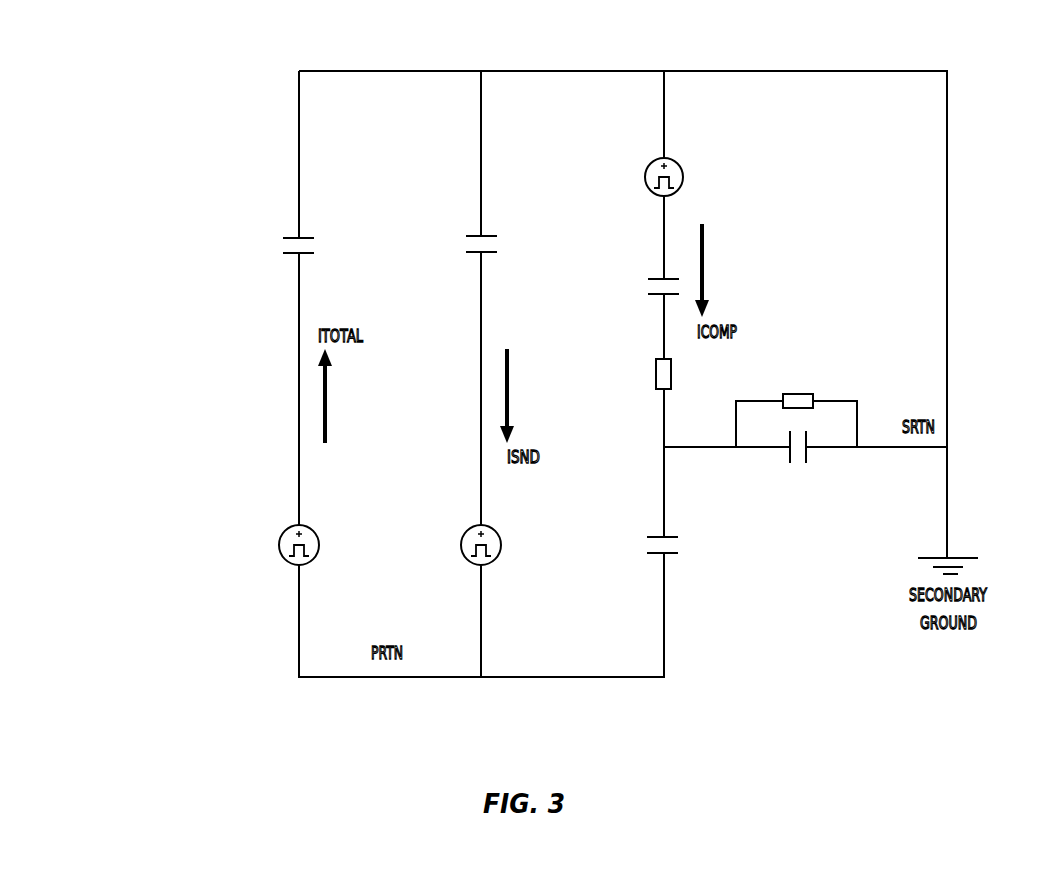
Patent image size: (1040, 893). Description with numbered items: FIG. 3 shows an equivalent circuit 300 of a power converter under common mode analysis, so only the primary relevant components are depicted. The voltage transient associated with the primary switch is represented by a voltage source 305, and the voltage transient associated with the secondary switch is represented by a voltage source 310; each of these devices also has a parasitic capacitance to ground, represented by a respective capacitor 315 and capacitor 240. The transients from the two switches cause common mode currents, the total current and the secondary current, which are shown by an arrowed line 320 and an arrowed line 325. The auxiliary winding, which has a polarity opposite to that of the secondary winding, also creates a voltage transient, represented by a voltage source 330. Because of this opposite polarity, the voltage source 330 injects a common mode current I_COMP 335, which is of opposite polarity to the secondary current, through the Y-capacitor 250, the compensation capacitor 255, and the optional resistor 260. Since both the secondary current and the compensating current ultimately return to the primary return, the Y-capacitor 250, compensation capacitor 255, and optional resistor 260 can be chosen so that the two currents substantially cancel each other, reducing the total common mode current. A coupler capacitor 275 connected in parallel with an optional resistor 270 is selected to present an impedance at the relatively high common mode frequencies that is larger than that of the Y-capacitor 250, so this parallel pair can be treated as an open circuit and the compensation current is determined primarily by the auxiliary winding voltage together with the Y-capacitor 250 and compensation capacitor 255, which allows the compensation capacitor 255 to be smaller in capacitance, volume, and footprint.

The equivalent circuit 300 is at (160, 68).
The capacitor 315 is at (284, 237).
The capacitor 240 is at (470, 235).
The voltage source 330 is at (650, 163).
The compensation capacitor 255 is at (651, 278).
The optional resistor 260 is at (655, 358).
The Y-capacitor 250 is at (650, 536).
The optional resistor 270 is at (792, 393).
The coupler capacitor 275 is at (797, 467).
The voltage source 305 is at (291, 528).
The voltage source 310 is at (472, 528).
The arrowed line 325 is at (328, 400).
The arrowed line 320 is at (510, 406).
The common mode current I_COMP 335 is at (705, 282).